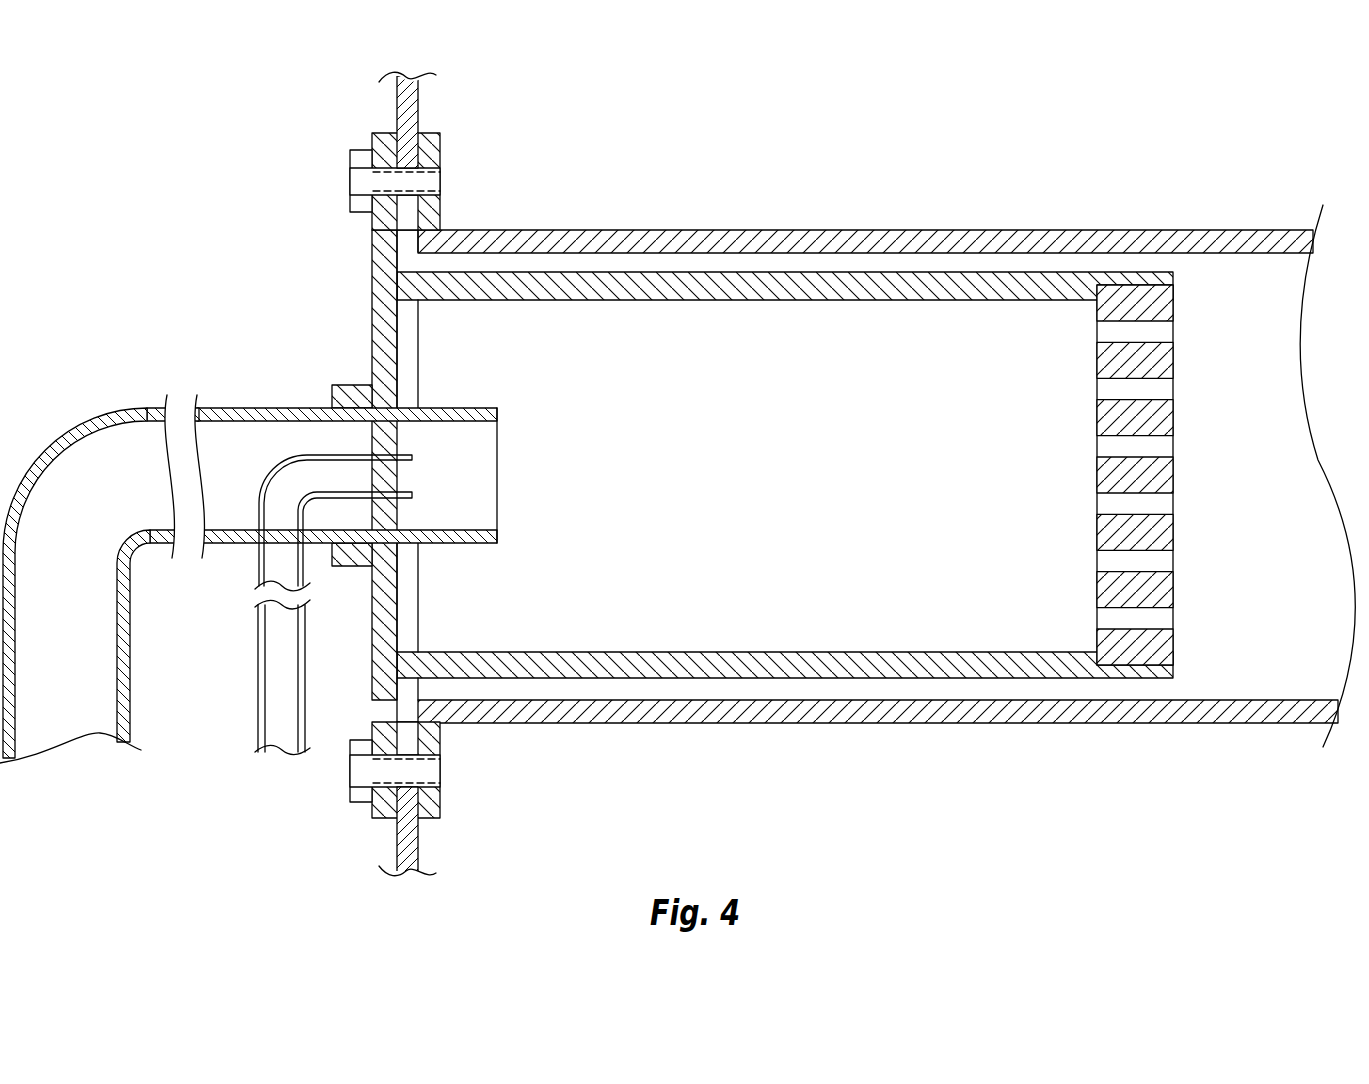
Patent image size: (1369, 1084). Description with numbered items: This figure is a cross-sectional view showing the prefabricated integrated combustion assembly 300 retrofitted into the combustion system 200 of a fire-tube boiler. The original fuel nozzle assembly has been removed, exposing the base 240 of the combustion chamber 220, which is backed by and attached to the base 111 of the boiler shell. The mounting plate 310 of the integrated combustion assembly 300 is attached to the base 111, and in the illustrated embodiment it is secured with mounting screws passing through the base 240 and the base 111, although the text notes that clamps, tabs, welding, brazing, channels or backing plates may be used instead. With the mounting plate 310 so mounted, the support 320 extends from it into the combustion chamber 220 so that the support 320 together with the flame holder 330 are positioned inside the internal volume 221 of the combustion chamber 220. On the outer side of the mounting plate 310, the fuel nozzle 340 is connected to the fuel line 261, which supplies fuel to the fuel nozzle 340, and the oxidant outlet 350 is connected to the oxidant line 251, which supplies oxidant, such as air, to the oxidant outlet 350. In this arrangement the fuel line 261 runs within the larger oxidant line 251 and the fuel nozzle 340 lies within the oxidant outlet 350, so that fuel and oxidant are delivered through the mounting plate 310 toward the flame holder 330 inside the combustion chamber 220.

The base of the shell 111 is at (397, 126).
The combustion system 200 is at (886, 408).
The combustion chamber 220 is at (767, 230).
The internal volume 221 is at (1280, 539).
The base of the combustion chamber 240 is at (440, 152).
The oxidant line 251 is at (128, 656).
The fuel line 261 is at (258, 688).
The integrated combustion assembly 300 is at (840, 430).
The mounting plate 310 is at (376, 237).
The support 320 is at (633, 266).
The flame holder 330 is at (1197, 413).
The fuel nozzle 340 is at (362, 448).
The oxidant outlet 350 is at (503, 434).